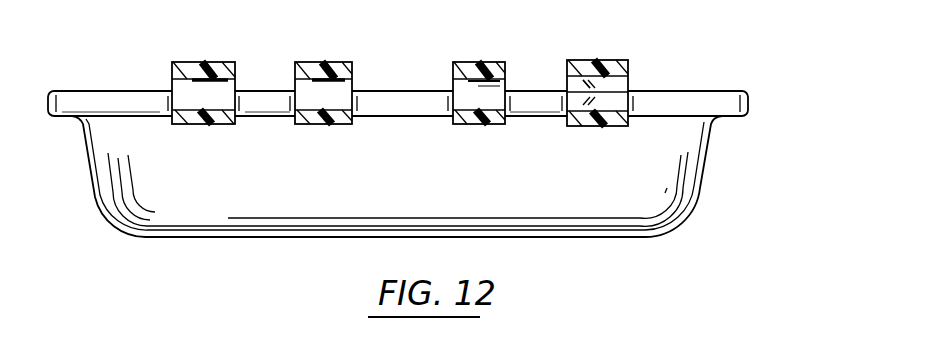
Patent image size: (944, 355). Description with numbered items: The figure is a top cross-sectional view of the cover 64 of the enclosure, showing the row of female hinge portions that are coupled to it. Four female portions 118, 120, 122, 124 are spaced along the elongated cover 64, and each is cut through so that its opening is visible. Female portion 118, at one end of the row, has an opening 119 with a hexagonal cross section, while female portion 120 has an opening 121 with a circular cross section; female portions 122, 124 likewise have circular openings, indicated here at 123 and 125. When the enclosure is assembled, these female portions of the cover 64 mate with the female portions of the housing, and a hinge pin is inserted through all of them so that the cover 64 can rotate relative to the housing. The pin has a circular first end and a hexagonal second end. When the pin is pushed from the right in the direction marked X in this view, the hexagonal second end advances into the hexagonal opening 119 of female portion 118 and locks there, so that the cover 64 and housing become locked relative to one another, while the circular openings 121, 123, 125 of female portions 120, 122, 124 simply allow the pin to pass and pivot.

The cover 64 is at (700, 198).
The female portion 118 is at (585, 60).
The opening 119 is at (642, 73).
The female portion 120 is at (463, 62).
The opening 121 is at (512, 78).
The female portion 122 is at (307, 62).
The clamp block recess 123 is at (358, 84).
The female portion 124 is at (198, 62).
The clamp block recess 125 is at (242, 82).